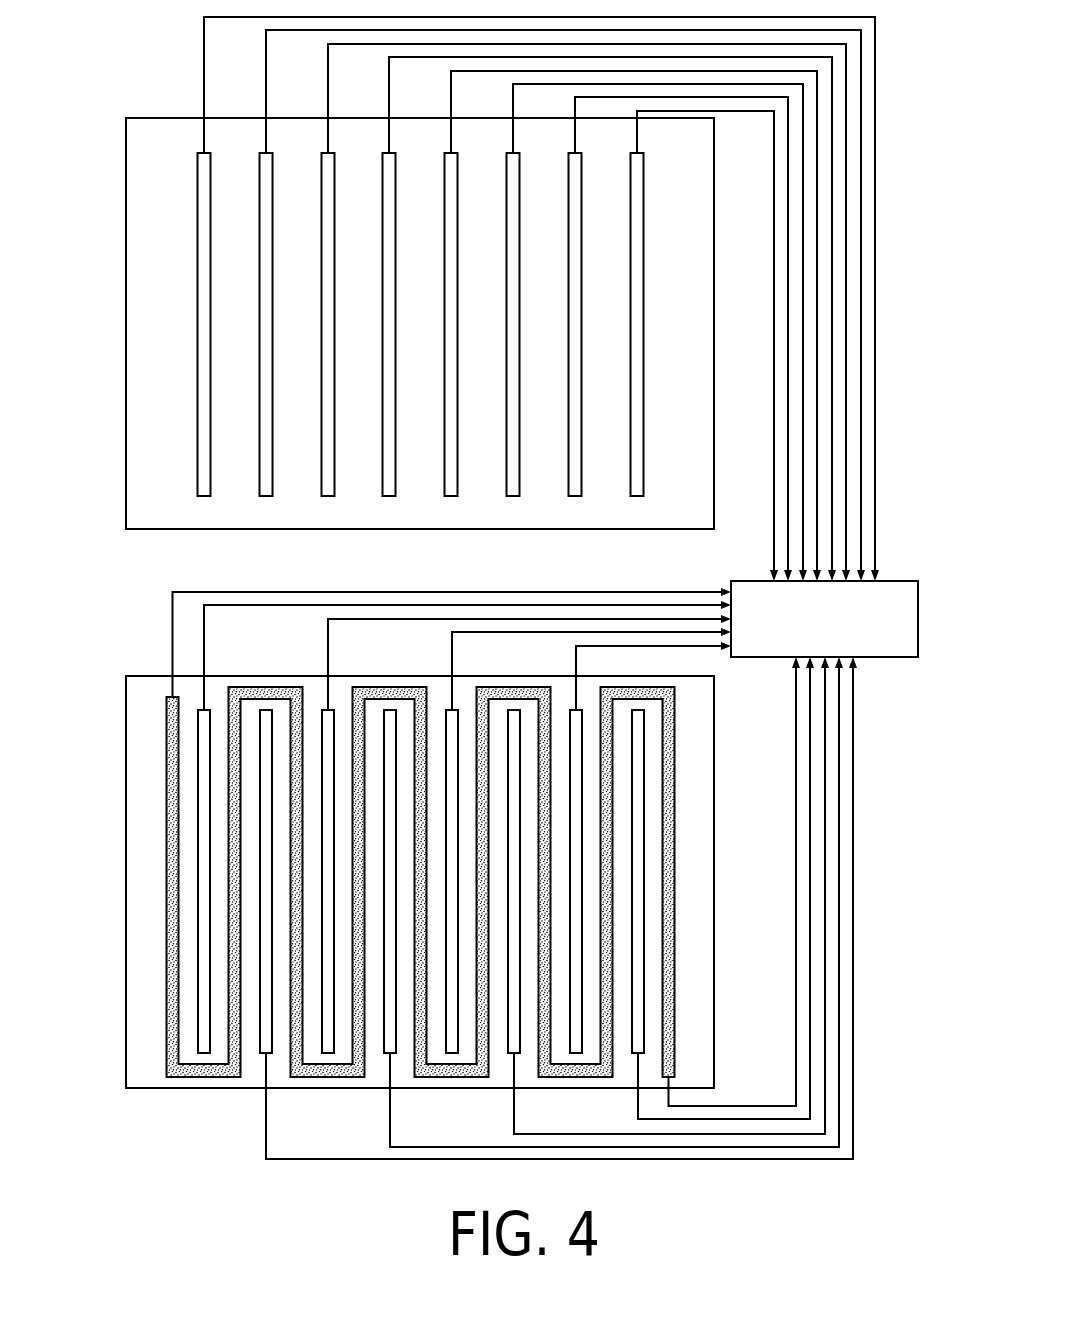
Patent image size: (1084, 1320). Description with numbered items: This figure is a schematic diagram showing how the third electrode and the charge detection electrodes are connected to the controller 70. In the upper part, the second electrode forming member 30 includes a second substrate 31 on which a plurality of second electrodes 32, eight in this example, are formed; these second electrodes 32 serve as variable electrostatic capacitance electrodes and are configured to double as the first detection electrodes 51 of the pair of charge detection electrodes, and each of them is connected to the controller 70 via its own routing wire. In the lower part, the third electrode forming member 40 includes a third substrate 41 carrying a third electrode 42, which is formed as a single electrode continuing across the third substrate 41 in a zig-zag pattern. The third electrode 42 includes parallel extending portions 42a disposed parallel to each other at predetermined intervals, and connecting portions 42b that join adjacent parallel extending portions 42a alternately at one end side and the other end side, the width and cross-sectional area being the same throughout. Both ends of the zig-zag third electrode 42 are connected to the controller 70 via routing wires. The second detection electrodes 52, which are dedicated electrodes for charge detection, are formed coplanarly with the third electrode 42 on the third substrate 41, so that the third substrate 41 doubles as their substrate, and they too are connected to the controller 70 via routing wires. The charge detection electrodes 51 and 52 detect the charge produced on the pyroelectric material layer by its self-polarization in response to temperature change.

The second electrode forming member 30 is at (124, 102).
The second substrate 31 is at (140, 240).
The second electrodes 32 is at (421, 370).
The first detection electrodes 51 is at (446, 497).
The third electrode forming member 40 is at (124, 670).
The third substrate 41 is at (695, 887).
The third electrode 42 is at (474, 848).
The parallel extending portions 42a is at (613, 998).
The connecting portions 42b is at (373, 688).
The second detection electrodes 52 is at (643, 810).
The controller 70 is at (893, 580).